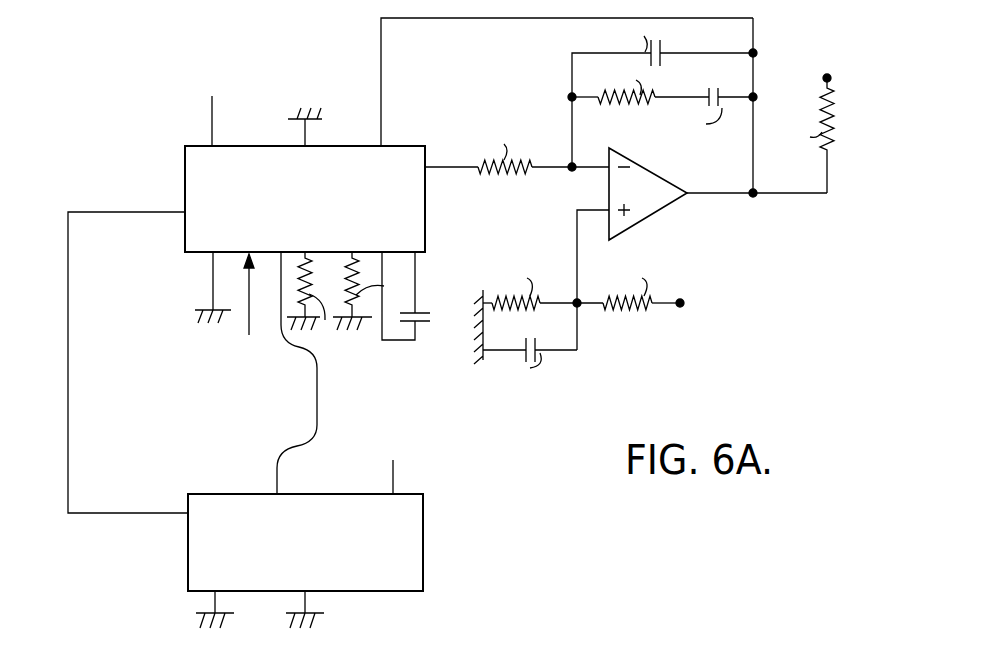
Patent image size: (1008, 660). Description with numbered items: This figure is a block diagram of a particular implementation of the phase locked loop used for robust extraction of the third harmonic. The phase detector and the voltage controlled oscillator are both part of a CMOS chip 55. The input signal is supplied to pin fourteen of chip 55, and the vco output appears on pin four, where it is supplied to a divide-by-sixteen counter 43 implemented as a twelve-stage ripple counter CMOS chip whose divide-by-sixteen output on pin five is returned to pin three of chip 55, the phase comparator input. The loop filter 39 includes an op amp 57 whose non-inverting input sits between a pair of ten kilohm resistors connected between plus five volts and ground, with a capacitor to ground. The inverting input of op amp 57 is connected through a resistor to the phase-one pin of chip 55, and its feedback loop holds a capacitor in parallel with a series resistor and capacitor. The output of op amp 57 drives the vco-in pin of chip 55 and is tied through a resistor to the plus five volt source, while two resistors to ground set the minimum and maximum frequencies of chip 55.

The loop filter 39 is at (790, 215).
The divide-by-sixteen counter 43 is at (423, 546).
The 4046-type chip 55 is at (425, 200).
The op amp 57 is at (668, 205).